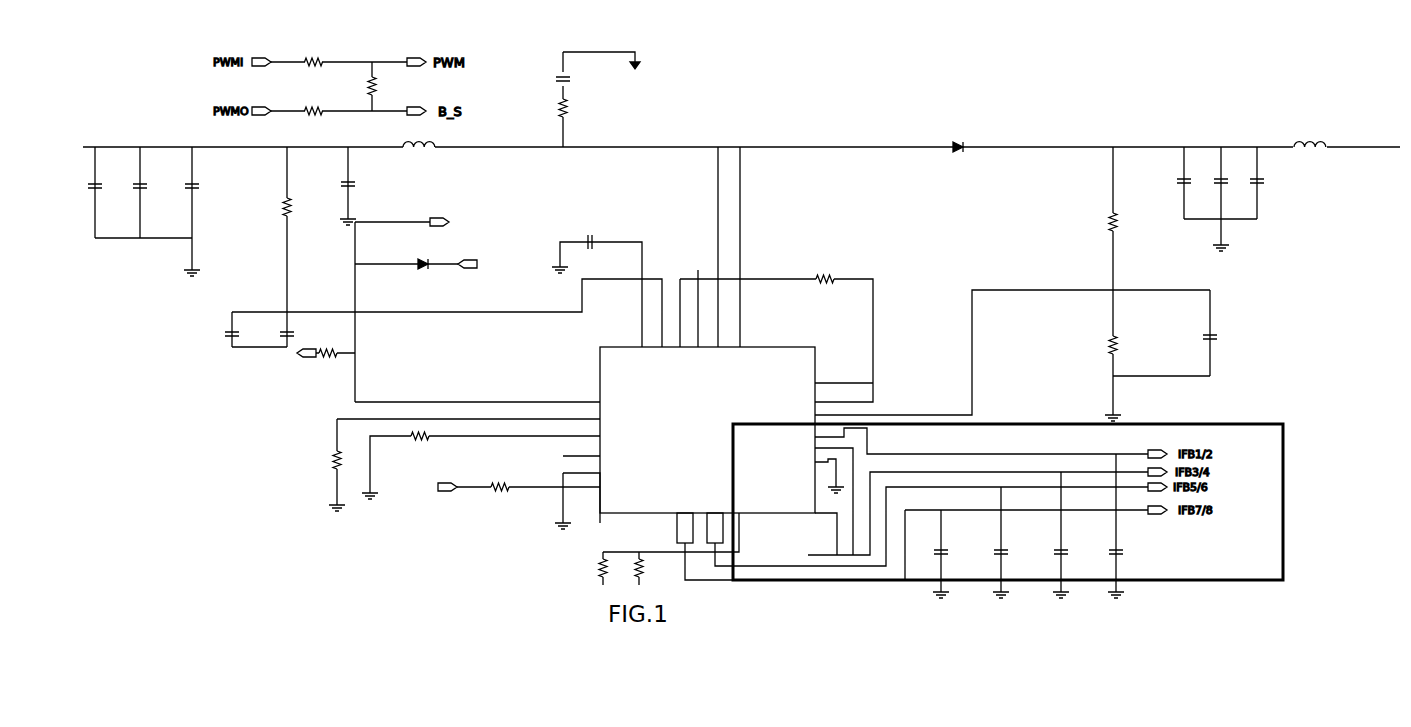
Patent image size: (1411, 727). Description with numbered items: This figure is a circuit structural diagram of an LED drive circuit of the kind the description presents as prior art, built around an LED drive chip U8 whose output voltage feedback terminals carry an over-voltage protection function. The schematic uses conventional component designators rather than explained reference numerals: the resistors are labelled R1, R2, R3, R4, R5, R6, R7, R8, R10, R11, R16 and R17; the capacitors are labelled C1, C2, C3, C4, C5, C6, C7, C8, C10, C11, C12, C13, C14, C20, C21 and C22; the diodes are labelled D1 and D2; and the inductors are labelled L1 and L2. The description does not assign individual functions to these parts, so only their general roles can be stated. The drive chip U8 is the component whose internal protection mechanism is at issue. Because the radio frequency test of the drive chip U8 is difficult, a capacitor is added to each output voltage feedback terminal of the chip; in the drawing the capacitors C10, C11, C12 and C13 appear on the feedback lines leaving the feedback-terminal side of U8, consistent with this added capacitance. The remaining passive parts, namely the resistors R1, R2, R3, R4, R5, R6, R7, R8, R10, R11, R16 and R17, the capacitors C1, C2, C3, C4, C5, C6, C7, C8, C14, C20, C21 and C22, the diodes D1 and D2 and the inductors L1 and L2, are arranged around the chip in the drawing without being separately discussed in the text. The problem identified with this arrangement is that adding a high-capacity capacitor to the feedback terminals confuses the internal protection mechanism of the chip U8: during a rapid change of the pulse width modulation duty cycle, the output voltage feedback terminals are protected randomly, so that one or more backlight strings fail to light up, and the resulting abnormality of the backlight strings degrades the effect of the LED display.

The resistor R1 is at (314, 72).
The resistor R2 is at (314, 121).
The resistor R3 is at (365, 86).
The resistor R4 is at (279, 229).
The resistor R5 is at (326, 362).
The resistor R6 is at (331, 465).
The resistor R7 is at (501, 275).
The resistor R8 is at (655, 392).
The resistor R10 is at (1104, 218).
The resistor R11 is at (1120, 355).
The resistor R16 is at (596, 568).
The resistor R17 is at (632, 568).
The capacitor C1 is at (104, 192).
The capacitor C2 is at (149, 192).
The capacitor C3 is at (200, 211).
The capacitor C4 is at (356, 186).
The capacitor C5 is at (241, 329).
The capacitor C6 is at (296, 329).
The capacitor C7 is at (597, 291).
The capacitor C8 is at (572, 79).
The capacitor C10 is at (949, 554).
The capacitor C11 is at (1009, 542).
The capacitor C12 is at (1069, 535).
The capacitor C13 is at (1124, 526).
The capacitor C14 is at (1219, 333).
The capacitor C20 is at (1192, 183).
The capacitor C21 is at (1229, 199).
The capacitor C22 is at (1266, 183).
The diode D1 is at (960, 156).
The diode D2 is at (416, 273).
The inductor L1 is at (1310, 137).
The inductor L2 is at (419, 137).
The LED driver chip U8 is at (707, 421).